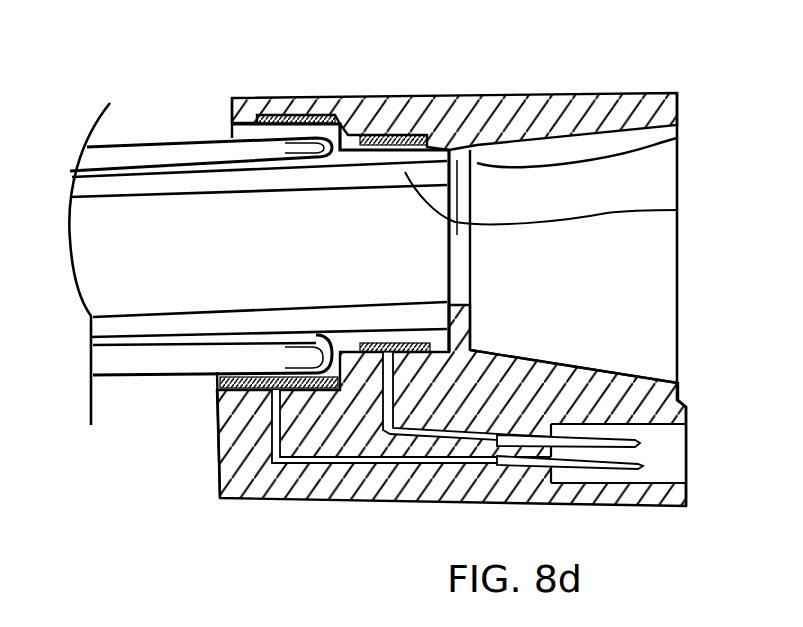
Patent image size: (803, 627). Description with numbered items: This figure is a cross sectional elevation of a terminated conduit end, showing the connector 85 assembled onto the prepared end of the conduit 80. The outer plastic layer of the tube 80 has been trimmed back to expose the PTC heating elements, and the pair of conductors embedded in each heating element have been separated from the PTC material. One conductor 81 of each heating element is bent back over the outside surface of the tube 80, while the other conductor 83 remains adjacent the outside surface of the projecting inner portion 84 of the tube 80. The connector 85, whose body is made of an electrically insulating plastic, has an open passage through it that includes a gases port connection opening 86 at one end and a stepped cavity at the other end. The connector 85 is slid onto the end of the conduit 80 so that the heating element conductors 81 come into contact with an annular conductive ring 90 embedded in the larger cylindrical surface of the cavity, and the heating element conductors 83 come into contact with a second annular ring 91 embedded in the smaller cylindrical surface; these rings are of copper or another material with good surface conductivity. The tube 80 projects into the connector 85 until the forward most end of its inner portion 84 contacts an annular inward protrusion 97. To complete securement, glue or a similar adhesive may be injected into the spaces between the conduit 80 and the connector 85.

The conduit 80 is at (174, 281).
The conductor 81 is at (303, 98).
The conductor 83 is at (400, 97).
The inner portion 84 is at (680, 211).
The connector 85 is at (267, 500).
The gases port connection opening 86 is at (627, 247).
The annular conductive ring 90 is at (267, 98).
The annular ring 91 is at (423, 97).
The annular inward protrusion 97 is at (677, 137).